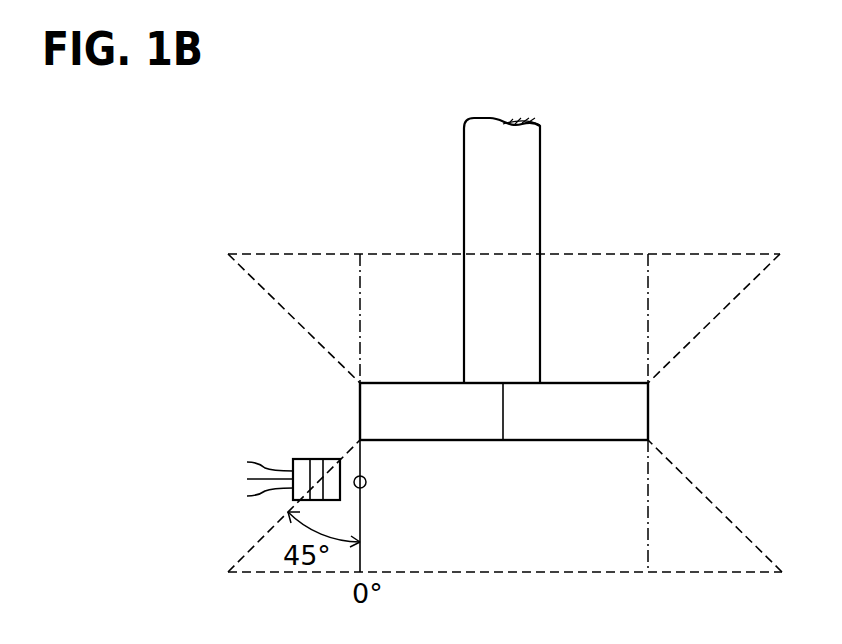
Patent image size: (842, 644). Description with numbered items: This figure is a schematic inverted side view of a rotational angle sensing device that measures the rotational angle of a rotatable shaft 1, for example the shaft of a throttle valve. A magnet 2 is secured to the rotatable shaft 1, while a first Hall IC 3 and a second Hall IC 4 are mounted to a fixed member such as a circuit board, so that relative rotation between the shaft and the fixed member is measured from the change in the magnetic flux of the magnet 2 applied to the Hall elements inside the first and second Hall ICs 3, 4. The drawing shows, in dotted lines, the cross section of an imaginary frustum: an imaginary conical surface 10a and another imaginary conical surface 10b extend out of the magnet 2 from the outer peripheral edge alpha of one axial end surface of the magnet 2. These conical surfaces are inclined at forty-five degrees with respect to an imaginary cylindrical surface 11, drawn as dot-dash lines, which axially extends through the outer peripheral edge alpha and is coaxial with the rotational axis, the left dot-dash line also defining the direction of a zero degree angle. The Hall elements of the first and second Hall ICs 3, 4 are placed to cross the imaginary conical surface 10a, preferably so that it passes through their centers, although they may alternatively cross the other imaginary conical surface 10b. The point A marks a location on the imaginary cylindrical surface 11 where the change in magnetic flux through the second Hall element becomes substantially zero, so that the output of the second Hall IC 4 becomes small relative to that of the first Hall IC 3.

The rotatable shaft 1 is at (525, 167).
The magnet 2 is at (580, 441).
The first Hall IC 3 is at (316, 459).
The second Hall IC 4 is at (293, 459).
The imaginary conical surface 10a is at (260, 530).
The imaginary conical surface 10b is at (277, 307).
The imaginary cylindrical surface 11 is at (650, 492).
The point A is at (366, 484).
The outer peripheral edge alpha is at (363, 443).